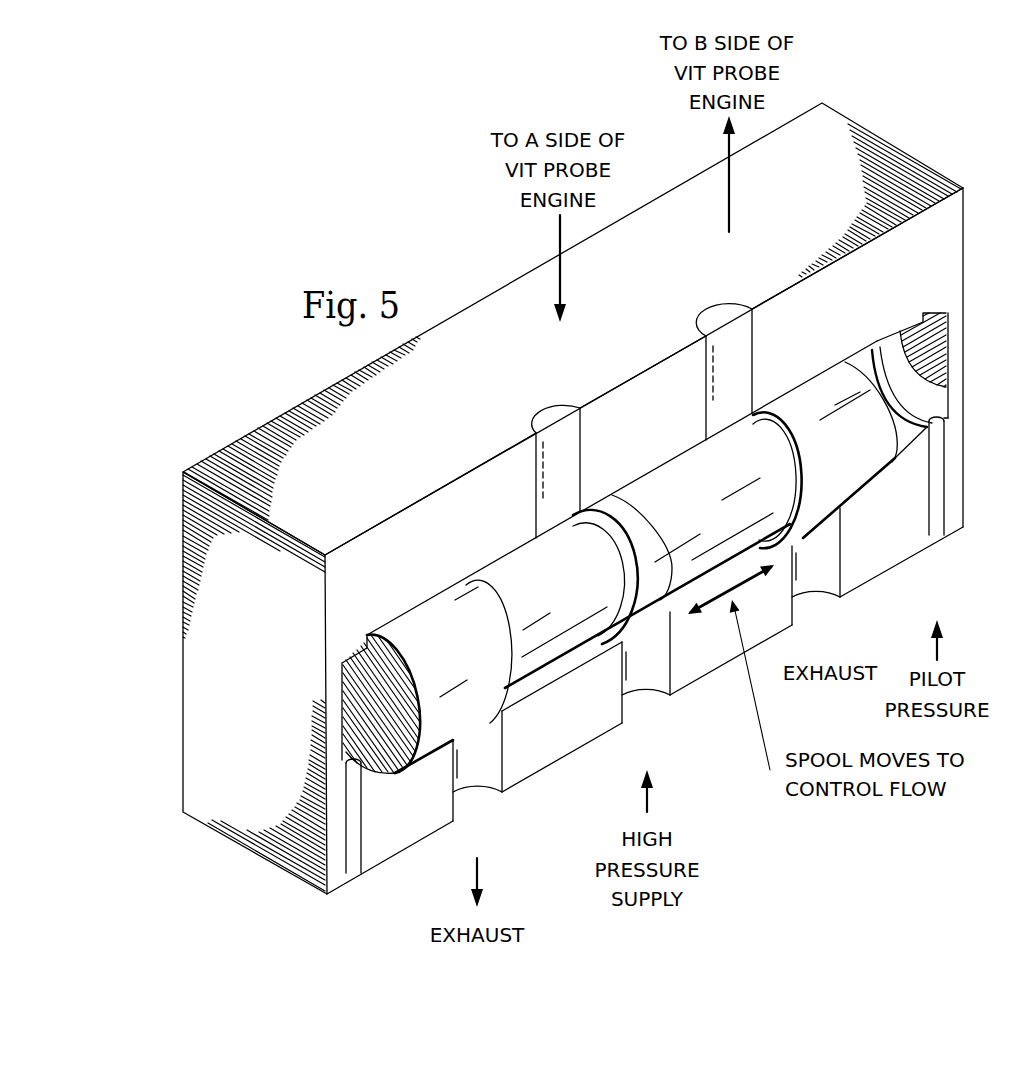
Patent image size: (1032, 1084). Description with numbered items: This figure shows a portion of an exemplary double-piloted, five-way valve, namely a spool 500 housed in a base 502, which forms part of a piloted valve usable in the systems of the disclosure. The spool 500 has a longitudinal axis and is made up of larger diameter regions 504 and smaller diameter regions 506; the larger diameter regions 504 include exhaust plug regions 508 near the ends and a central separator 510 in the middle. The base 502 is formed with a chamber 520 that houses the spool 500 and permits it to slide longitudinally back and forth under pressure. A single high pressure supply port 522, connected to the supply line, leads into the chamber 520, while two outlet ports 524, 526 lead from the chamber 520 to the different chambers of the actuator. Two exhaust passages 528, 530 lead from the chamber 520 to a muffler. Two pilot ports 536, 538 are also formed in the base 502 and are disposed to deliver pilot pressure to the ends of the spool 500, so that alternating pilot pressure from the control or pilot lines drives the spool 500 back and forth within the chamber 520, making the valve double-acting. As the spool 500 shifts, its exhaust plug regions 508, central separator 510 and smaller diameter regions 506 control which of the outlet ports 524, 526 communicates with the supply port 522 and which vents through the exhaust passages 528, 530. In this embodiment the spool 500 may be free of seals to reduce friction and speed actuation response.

The spool 500 is at (394, 611).
The base 502 is at (422, 518).
The larger diameter regions 504 is at (605, 660).
The smaller diameter regions 506 is at (513, 565).
The exhaust plug regions 508 is at (448, 600).
The central separator 510 is at (628, 497).
The chamber 520 is at (880, 352).
The high pressure supply port 522 is at (646, 682).
The outlet port 524 is at (565, 403).
The outlet port 526 is at (737, 305).
The exhaust passage 528 is at (478, 782).
The exhaust passage 530 is at (816, 582).
The pilot port 536 is at (935, 538).
The pilot port 538 is at (355, 872).